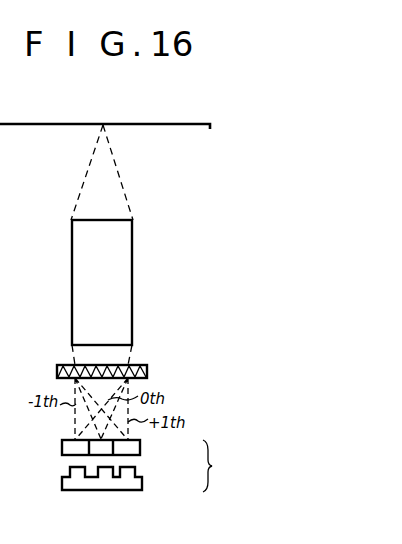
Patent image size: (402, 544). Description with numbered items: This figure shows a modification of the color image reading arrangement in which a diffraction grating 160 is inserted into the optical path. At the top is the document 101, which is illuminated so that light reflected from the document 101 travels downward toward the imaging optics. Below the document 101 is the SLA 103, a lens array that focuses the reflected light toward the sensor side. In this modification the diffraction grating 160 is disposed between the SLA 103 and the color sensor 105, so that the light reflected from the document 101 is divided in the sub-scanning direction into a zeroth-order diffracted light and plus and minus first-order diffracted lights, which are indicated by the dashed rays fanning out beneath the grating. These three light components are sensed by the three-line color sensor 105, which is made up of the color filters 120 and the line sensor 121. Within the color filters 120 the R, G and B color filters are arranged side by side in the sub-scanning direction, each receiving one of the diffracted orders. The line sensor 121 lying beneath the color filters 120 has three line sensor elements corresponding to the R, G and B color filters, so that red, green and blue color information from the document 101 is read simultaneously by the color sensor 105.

The document 101 is at (209, 130).
The SLA 103 is at (132, 290).
The diffraction grating 160 is at (147, 372).
The color filters 120 is at (140, 447).
The line sensor 121 is at (142, 484).
The color sensor 105 is at (226, 466).
The R color filter R is at (62, 447).
The G color filter G is at (84, 457).
The B color filter B is at (120, 455).